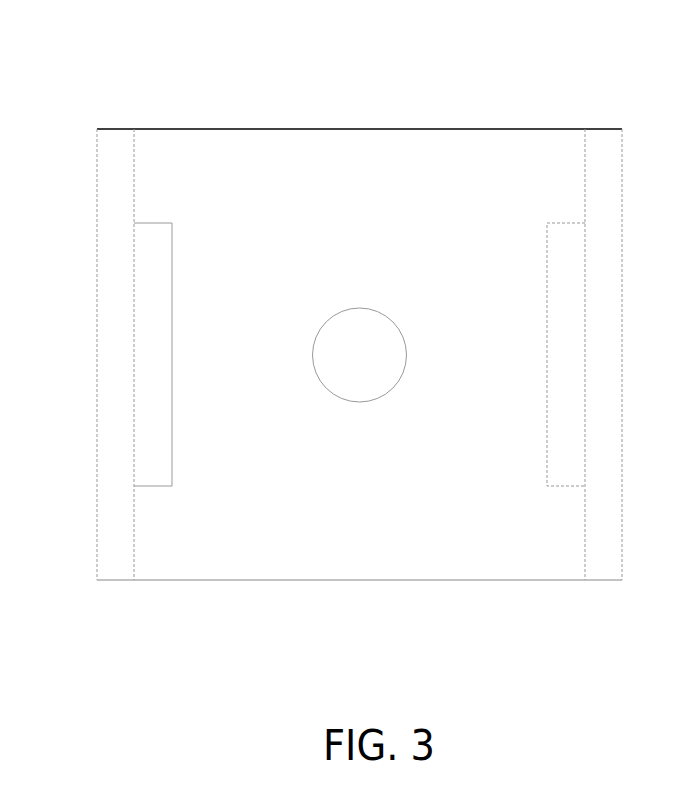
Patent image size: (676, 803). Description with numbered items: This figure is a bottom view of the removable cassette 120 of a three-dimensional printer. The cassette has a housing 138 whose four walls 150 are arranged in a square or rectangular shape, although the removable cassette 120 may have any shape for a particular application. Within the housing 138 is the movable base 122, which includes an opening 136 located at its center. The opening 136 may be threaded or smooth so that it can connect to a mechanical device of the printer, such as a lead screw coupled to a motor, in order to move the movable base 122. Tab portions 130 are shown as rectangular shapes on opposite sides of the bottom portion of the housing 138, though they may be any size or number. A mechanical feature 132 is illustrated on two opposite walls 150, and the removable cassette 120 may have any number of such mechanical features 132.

The removable cassette 120 is at (373, 128).
The movable base 122 is at (253, 145).
The tab portions 130 is at (163, 287).
The mechanical feature 132 is at (112, 128).
The opening 136 is at (379, 366).
The housing 138 is at (308, 128).
The walls 150 is at (187, 128).